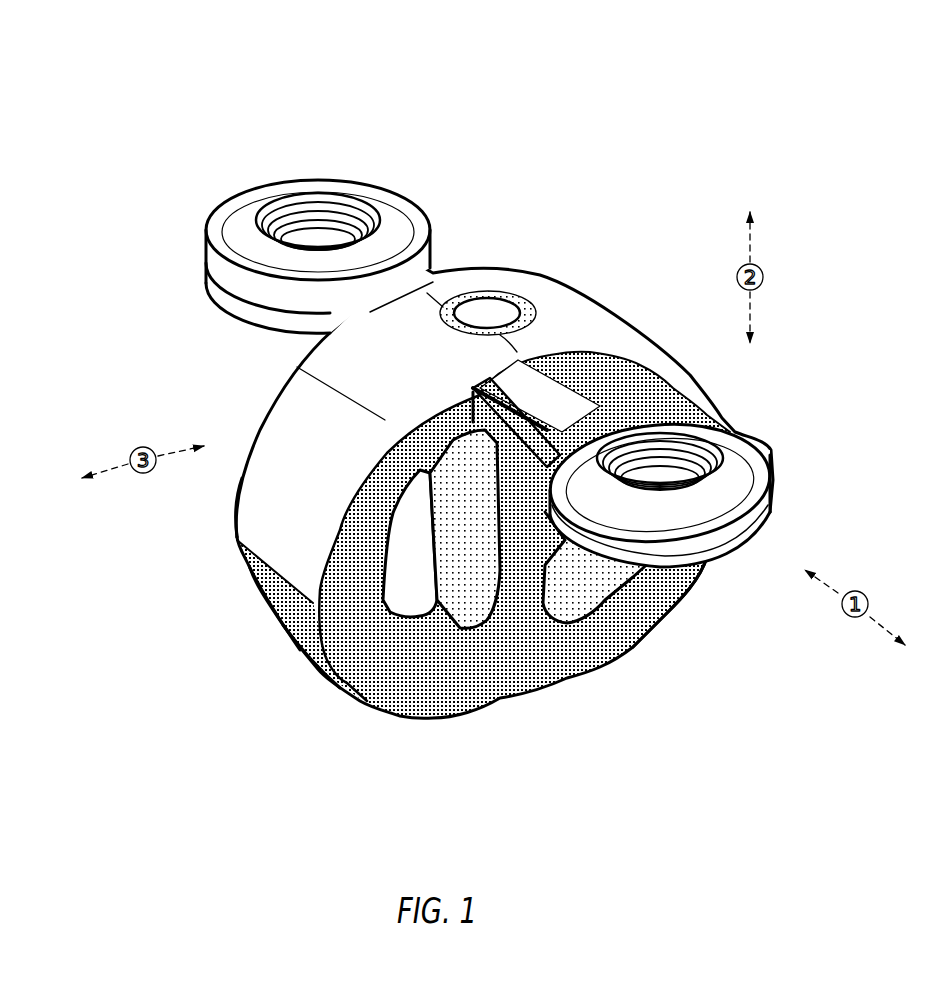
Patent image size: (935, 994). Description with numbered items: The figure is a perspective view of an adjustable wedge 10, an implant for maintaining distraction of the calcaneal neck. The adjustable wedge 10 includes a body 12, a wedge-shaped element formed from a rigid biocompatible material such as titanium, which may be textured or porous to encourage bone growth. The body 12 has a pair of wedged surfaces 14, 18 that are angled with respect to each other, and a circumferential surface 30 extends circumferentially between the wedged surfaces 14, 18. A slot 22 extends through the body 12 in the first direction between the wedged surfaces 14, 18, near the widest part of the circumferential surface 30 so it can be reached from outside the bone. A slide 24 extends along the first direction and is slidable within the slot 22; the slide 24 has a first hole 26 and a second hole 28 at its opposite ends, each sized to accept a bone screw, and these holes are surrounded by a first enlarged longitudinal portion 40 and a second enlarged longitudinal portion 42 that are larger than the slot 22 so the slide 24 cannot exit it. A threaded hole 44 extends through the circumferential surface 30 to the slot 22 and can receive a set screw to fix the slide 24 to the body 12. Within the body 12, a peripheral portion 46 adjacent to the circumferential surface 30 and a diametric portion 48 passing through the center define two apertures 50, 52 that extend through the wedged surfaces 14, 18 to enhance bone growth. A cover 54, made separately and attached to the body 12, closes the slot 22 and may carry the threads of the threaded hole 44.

The adjustable wedge 10 is at (118, 110).
The body 12 is at (582, 650).
The wedged surface 14 is at (252, 587).
The wedged surface 18 is at (340, 687).
The slot 22 is at (534, 388).
The slide 24 is at (770, 488).
The first hole 26 is at (298, 222).
The second hole 28 is at (702, 453).
The circumferential surface 30 is at (290, 650).
The first enlarged longitudinal portion 40 is at (216, 283).
The second enlarged longitudinal portion 42 is at (760, 520).
The threaded hole 44 is at (494, 316).
The peripheral portion 46 is at (415, 717).
The diametric portion 48 is at (517, 585).
The aperture 50 is at (409, 562).
The aperture 52 is at (569, 558).
The cover 54 is at (238, 520).